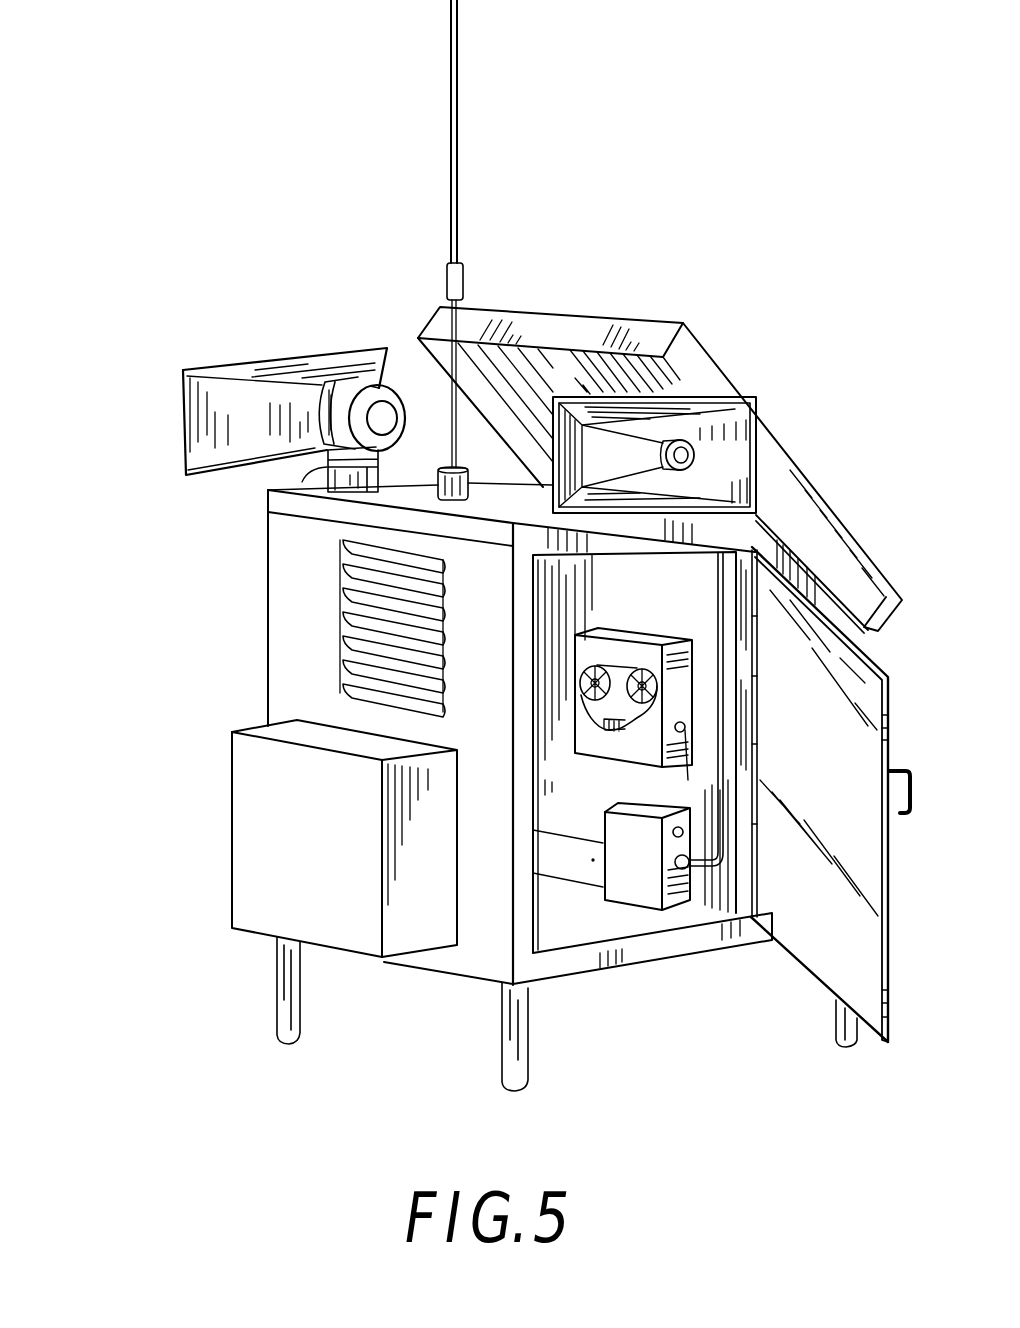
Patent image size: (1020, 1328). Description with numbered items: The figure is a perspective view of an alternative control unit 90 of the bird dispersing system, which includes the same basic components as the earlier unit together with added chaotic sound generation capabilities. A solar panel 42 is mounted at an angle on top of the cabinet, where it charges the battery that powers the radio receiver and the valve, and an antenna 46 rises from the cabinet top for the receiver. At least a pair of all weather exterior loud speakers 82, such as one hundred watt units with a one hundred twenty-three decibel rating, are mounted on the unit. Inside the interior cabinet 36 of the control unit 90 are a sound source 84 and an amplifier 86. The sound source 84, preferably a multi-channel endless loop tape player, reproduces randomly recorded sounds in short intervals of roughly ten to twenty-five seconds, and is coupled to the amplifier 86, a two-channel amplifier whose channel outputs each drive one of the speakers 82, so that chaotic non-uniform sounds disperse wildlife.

The interior cabinet 36 is at (583, 927).
The solar panel 42 is at (583, 300).
The antenna 46 is at (458, 102).
The all weather exterior loud speakers 82 is at (304, 352).
The sound source 84 is at (640, 632).
The amplifier 86 is at (648, 875).
The control unit 90 is at (138, 657).